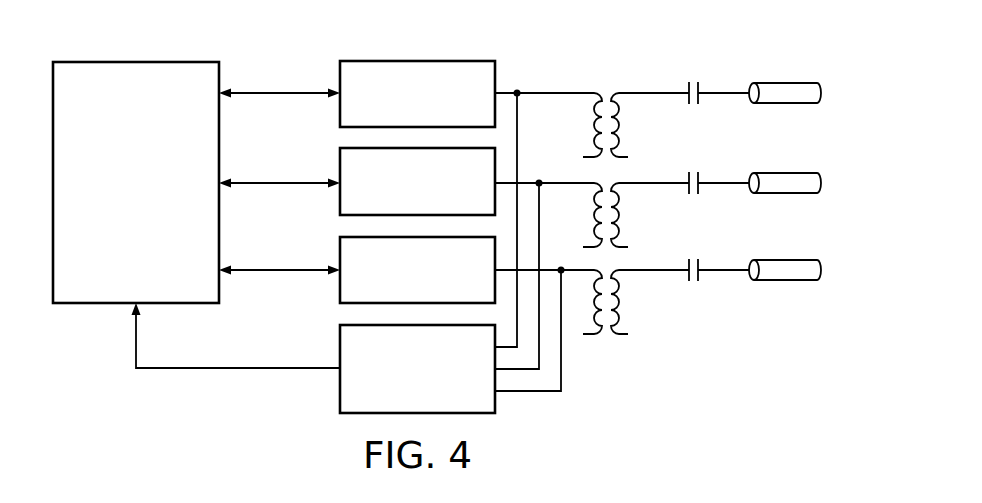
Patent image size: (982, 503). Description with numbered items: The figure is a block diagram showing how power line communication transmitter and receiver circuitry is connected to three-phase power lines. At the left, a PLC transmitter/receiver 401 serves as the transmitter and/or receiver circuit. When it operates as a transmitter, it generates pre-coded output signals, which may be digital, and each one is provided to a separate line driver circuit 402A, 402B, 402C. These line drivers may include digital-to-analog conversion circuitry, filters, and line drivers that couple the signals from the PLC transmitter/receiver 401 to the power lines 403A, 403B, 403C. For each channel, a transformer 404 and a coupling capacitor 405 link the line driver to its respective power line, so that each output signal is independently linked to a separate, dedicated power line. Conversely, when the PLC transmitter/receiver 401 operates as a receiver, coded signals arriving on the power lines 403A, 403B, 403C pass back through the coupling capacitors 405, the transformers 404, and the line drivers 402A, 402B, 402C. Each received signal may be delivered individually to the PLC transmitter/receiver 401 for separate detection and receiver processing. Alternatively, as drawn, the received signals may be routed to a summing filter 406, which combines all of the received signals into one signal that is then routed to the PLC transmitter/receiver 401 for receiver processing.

The PLC transmitter/receiver 401 is at (116, 244).
The line driver circuit 402A is at (340, 77).
The line driver circuit 402B is at (340, 165).
The line driver circuit 402C is at (340, 286).
The power line 403A is at (784, 82).
The power line 403B is at (784, 172).
The power line 403C is at (784, 281).
The transformer 404 is at (606, 86).
The coupling capacitor 405 is at (694, 81).
The summing filter 406 is at (340, 380).